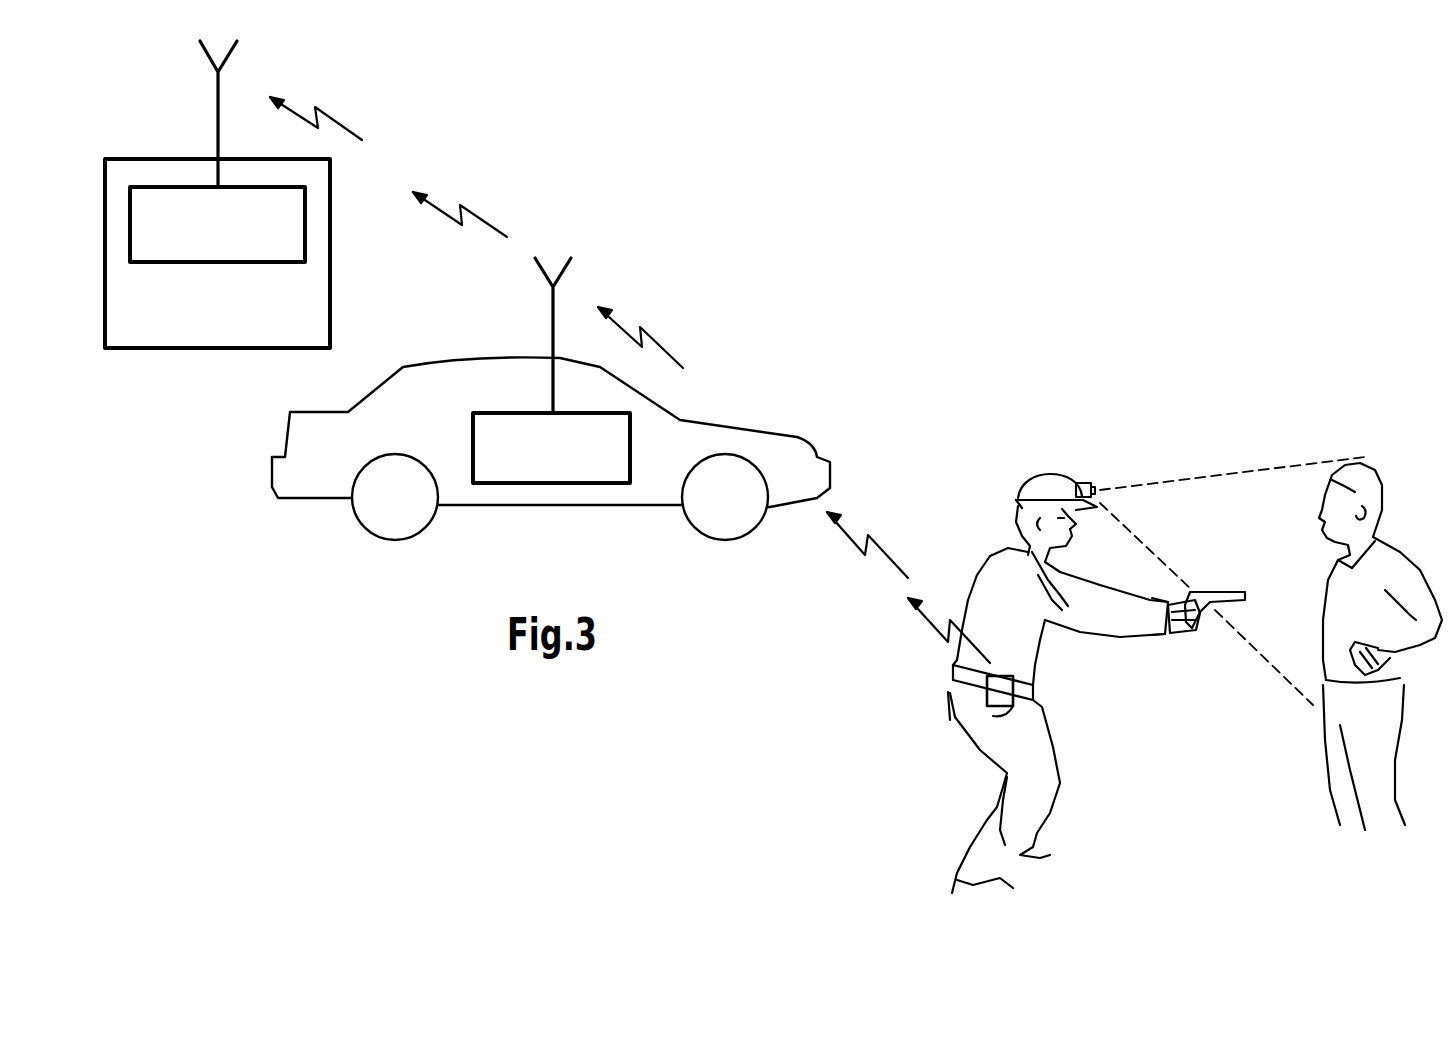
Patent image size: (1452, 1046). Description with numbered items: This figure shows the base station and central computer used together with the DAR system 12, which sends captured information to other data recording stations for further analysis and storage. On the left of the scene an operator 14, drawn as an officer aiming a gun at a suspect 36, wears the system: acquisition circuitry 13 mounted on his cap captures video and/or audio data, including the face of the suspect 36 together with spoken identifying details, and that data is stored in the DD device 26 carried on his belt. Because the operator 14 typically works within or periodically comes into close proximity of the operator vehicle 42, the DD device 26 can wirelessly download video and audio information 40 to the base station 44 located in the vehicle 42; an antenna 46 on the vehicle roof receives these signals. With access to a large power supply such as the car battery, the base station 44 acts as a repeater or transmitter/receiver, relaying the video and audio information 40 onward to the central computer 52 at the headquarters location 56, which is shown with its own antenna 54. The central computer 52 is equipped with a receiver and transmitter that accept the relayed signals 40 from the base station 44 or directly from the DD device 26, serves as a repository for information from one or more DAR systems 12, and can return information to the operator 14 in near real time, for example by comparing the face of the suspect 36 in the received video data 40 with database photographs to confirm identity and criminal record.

The DAR system 12 is at (963, 490).
The acquisition circuitry 13 is at (1088, 480).
The operator 14 is at (943, 707).
The DD device 26 is at (1013, 720).
The suspect 36 is at (1325, 745).
The video and audio information 40 is at (336, 125).
The operator vehicle 42 is at (762, 432).
The base station 44 is at (473, 430).
The vehicle antenna 46 is at (542, 272).
The central computer 52 is at (162, 187).
The headquarters antenna 54 is at (214, 61).
The headquarters location 56 is at (218, 348).